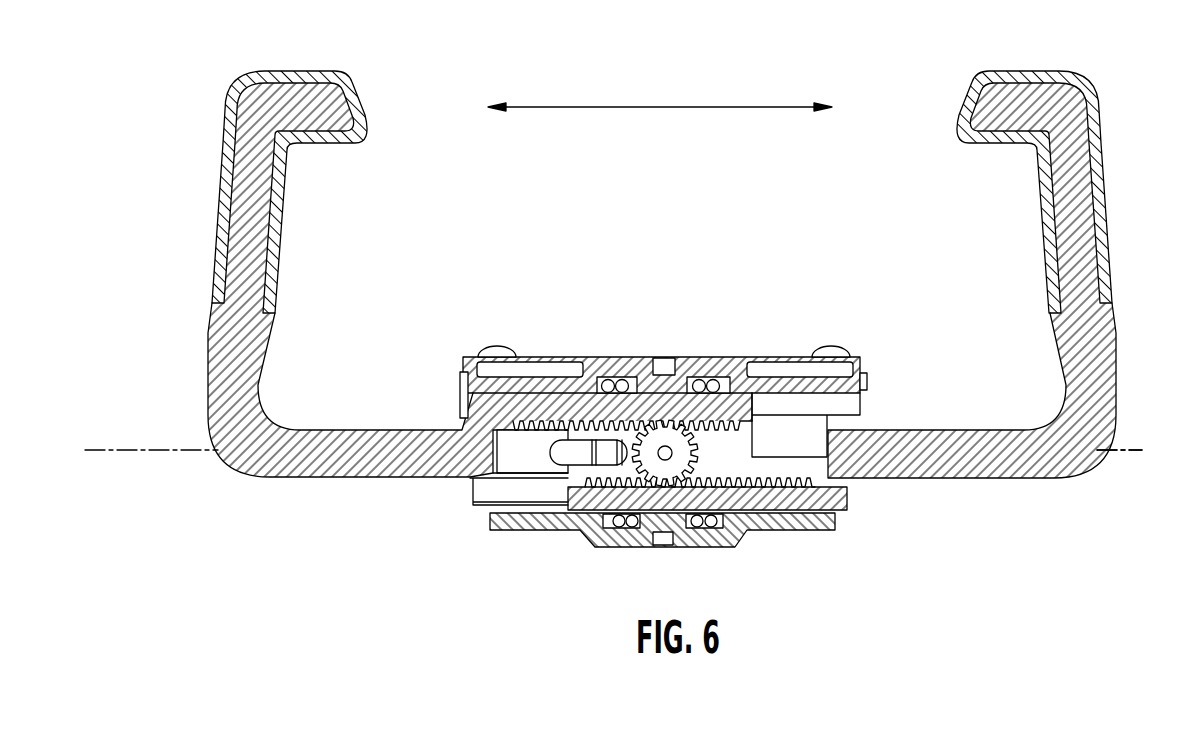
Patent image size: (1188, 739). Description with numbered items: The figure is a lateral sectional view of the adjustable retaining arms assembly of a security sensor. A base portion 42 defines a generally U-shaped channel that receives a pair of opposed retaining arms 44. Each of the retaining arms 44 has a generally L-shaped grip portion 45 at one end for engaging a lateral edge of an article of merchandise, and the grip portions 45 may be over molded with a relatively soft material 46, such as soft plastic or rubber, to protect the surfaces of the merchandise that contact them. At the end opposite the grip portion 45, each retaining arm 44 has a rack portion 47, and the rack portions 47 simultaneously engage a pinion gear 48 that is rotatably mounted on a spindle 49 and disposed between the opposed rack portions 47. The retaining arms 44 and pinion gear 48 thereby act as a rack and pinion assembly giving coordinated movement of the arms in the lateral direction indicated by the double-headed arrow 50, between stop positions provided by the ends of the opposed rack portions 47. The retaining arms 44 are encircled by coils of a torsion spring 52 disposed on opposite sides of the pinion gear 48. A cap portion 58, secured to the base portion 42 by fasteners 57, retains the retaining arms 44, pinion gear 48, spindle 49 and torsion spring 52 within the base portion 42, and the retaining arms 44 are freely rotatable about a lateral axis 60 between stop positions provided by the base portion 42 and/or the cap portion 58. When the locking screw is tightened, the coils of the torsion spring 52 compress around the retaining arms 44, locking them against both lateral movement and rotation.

The base portion 42 is at (535, 528).
The retaining arms 44 is at (308, 470).
The grip portion 45 is at (295, 107).
The soft material 46 is at (222, 167).
The rack portion 47 is at (773, 483).
The pinion gear 48 is at (657, 466).
The spindle 49 is at (670, 452).
The double-headed arrow 50 is at (640, 106).
The torsion spring 52 is at (697, 357).
The fasteners 57 is at (487, 347).
The cap portion 58 is at (468, 385).
The lateral axis 60 is at (1147, 452).